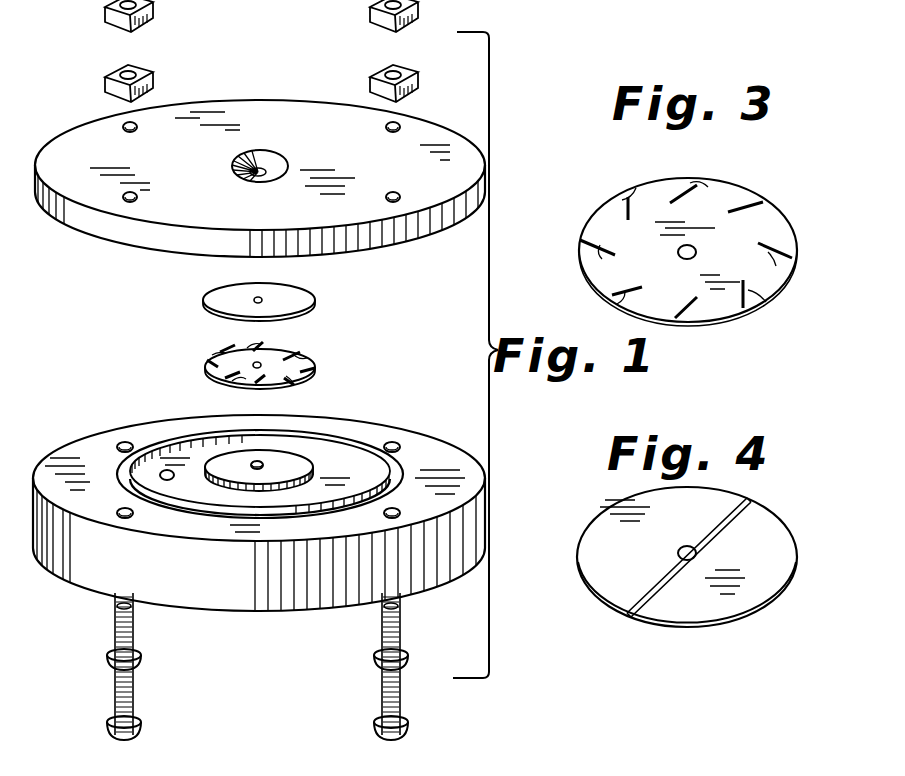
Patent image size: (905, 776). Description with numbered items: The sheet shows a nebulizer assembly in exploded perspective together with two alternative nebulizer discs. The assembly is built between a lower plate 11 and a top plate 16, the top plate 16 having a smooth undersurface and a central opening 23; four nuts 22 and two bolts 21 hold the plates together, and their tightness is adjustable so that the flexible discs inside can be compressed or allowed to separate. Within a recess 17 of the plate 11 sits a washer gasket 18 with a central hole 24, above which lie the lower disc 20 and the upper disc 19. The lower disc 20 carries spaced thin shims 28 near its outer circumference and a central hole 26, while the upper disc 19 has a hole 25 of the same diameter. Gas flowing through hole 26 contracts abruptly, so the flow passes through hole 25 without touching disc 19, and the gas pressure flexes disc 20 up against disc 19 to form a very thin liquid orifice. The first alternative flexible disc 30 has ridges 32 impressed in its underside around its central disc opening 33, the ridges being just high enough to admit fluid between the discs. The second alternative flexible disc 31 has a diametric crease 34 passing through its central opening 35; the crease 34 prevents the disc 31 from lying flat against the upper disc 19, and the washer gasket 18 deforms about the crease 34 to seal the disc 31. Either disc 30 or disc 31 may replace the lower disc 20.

In FIG. 1, the plate 11 is at (243, 593).
In FIG. 1, the top plate 16 is at (167, 235).
In FIG. 1, the annular recess 17 is at (363, 450).
In FIG. 1, the washer gasket 18 is at (287, 467).
In FIG. 1, the upper disc 19 is at (302, 303).
In FIG. 1, the lower disc 20 is at (313, 360).
In FIG. 1, the bolts 21 is at (137, 663).
In FIG. 1, the nuts 22 is at (137, 27).
In FIG. 1, the central opening 23 is at (262, 172).
In FIG. 1, the central hole 24 is at (250, 462).
In FIG. 1, the hole 25 is at (262, 297).
In FIG. 1, the hole 26 is at (262, 360).
In FIG. 1, the spaced thin shims 28 is at (255, 350).
In FIG. 3, the flexible disc 30 is at (760, 227).
In FIG. 4, the flexible disc 31 is at (763, 528).
In FIG. 3, the ridges 32 is at (667, 182).
In FIG. 3, the central disc opening 33 is at (690, 246).
In FIG. 4, the diametric crease 34 is at (632, 612).
In FIG. 4, the central opening 35 is at (688, 545).